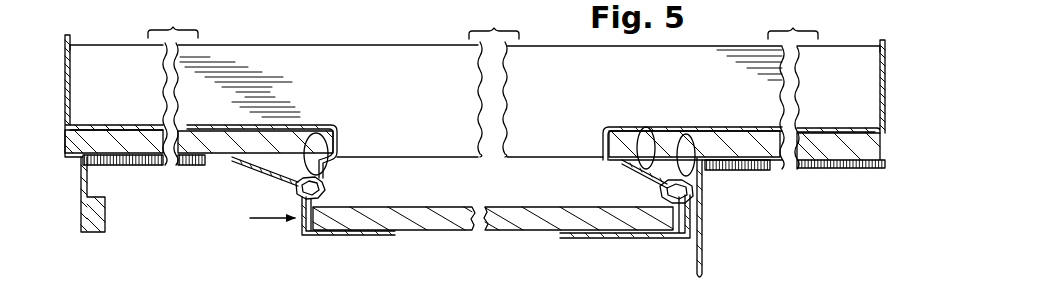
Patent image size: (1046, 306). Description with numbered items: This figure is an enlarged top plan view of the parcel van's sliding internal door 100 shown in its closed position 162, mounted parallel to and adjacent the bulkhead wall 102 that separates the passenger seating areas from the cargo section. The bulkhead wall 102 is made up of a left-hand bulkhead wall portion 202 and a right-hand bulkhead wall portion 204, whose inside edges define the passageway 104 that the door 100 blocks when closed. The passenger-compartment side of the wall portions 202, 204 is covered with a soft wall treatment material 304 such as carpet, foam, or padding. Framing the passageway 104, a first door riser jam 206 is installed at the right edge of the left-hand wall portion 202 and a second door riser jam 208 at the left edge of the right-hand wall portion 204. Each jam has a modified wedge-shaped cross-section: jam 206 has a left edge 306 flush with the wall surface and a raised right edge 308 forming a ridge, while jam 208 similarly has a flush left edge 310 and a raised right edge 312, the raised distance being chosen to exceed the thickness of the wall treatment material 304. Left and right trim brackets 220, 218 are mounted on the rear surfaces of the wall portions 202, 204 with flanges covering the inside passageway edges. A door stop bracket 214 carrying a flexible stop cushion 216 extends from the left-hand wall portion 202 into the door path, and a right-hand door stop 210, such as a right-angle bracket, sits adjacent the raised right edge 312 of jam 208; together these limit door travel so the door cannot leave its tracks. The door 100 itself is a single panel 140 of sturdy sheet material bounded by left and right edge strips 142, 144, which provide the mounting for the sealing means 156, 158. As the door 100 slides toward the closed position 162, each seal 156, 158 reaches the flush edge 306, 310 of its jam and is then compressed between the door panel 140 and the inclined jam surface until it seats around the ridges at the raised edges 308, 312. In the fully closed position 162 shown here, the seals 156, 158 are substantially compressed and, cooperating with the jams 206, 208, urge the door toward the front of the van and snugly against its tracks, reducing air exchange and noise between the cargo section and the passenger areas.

The sliding internal door 100 is at (496, 244).
The bulkhead wall 102 is at (213, 118).
The passageway 104 is at (596, 142).
The single panel 140 is at (448, 233).
The left edge strip 142 is at (333, 235).
The right edge strip 144 is at (614, 237).
The sealing means 156 is at (326, 184).
The sealing means 158 is at (660, 189).
The closed position 162 is at (565, 273).
The left-hand bulkhead wall portion 202 is at (97, 132).
The right-hand bulkhead wall portion 204 is at (733, 170).
The first door riser jam 206 is at (239, 177).
The second door riser jam 208 is at (643, 128).
The right-hand door stop 210 is at (705, 247).
The door stop bracket 214 is at (105, 174).
The flexible stop cushion 216 is at (105, 222).
The right trim bracket 218 is at (645, 127).
The left trim bracket 220 is at (238, 124).
The soft wall treatment material 304 is at (819, 168).
The left edge of jam 306 is at (233, 160).
The right edge of jam 308 is at (309, 130).
The flush left edge 310 is at (628, 162).
The raised right edge 312 is at (690, 148).